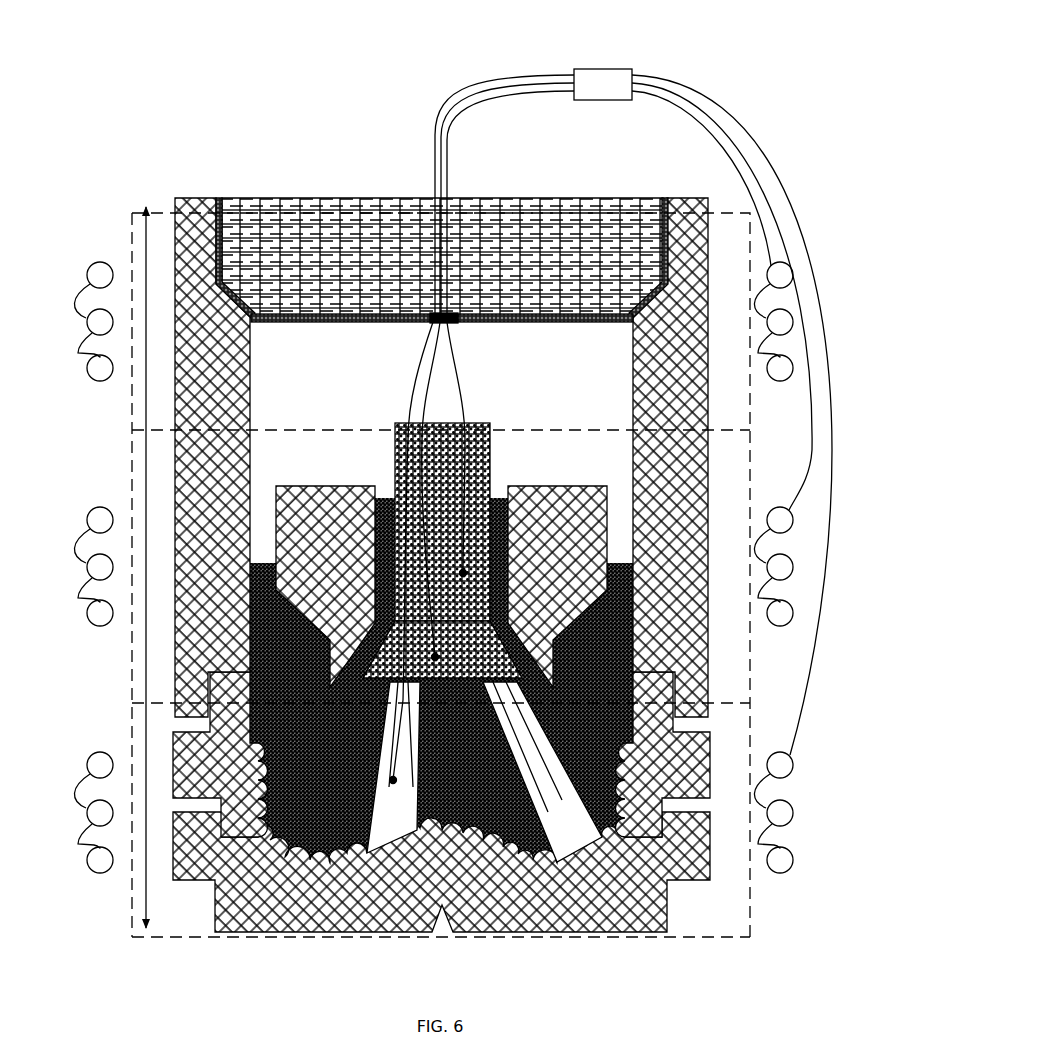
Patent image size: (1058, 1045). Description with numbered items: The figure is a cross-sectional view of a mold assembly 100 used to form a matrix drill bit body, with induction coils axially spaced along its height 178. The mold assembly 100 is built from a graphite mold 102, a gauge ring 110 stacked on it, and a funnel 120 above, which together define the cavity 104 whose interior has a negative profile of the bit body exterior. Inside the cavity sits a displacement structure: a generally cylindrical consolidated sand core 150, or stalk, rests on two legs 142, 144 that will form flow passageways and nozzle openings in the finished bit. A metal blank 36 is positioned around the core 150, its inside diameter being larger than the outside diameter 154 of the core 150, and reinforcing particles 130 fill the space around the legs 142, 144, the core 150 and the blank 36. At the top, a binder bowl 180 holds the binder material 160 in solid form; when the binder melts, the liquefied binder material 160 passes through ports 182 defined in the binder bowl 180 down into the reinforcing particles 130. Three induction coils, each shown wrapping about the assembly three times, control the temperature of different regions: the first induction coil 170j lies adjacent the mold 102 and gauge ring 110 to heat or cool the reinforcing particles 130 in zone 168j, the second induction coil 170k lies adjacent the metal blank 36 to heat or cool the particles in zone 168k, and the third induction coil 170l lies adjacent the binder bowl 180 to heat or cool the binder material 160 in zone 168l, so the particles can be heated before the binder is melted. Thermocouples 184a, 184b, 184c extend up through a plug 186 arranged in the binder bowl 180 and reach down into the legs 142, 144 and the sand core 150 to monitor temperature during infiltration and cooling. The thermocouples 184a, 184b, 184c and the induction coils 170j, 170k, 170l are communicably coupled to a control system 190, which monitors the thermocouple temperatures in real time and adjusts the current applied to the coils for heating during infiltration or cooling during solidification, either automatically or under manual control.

The mold assembly 100 is at (561, 959).
The mold 102 is at (718, 864).
The cavity 104 is at (303, 419).
The gauge ring 110 is at (723, 766).
The funnel 120 is at (729, 441).
The reinforcing particles 130 is at (299, 784).
The metal blank 36 is at (548, 556).
The leg 142 is at (375, 822).
The leg 144 is at (555, 829).
The sand core 150 is at (430, 490).
The outside diameter 154 is at (392, 606).
The binder material 160 is at (488, 260).
The zone 168j is at (131, 912).
The zone 168k is at (131, 678).
The zone 168l is at (131, 400).
The first induction coil 170j is at (415, 812).
The second induction coil 170k is at (414, 566).
The third induction coil 170l is at (415, 321).
The height 178 is at (150, 944).
The binder bowl 180 is at (218, 197).
The ports 182 is at (302, 319).
The thermocouple 184a is at (435, 150).
The thermocouple 184b is at (440, 166).
The thermocouple 184c is at (448, 178).
The plug 186 is at (433, 322).
The control system 190 is at (590, 95).